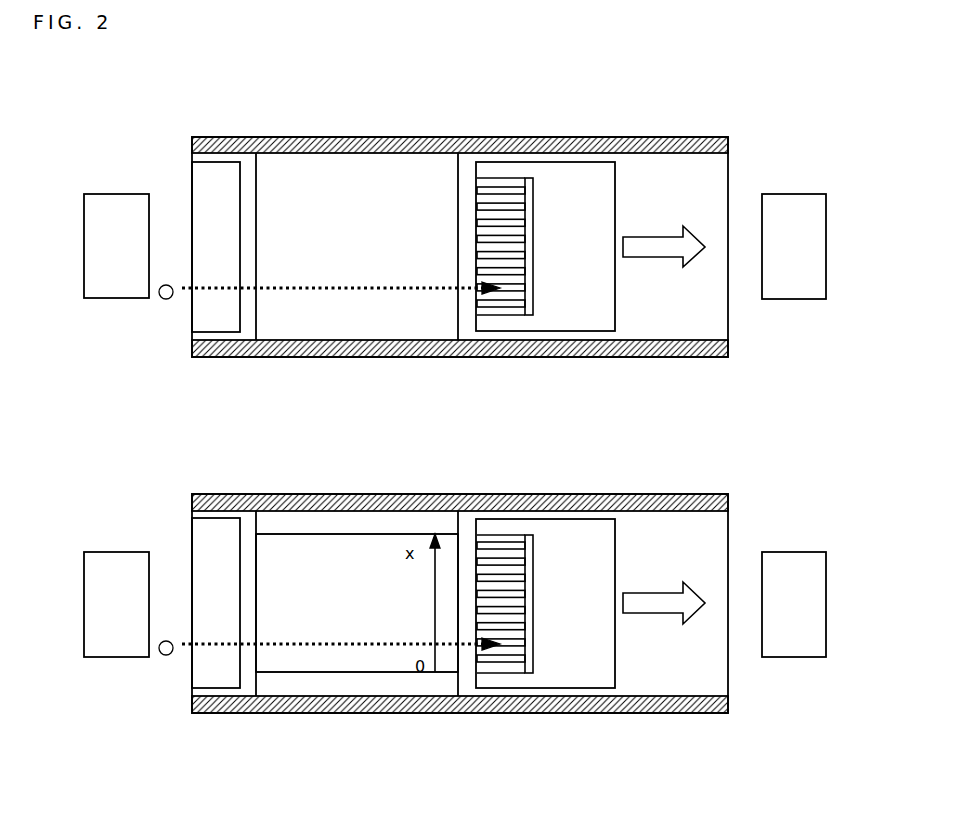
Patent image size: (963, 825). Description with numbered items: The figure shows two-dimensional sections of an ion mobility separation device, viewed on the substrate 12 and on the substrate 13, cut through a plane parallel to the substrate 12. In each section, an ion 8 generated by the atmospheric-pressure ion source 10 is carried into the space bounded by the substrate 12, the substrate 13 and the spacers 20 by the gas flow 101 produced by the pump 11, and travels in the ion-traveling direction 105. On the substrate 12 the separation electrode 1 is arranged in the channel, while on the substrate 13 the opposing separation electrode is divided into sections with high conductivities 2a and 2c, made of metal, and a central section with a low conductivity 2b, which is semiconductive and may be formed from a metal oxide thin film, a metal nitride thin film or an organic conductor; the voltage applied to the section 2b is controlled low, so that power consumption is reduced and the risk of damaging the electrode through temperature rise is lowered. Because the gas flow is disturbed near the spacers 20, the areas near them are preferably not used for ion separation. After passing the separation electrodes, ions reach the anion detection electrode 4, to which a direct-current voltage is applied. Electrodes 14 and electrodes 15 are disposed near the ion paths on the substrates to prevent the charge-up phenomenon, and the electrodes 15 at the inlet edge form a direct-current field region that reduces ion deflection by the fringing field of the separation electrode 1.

The separation electrode 1 is at (288, 170).
The section with high conductivity 2a is at (393, 681).
The section with low conductivity 2b is at (353, 558).
The section with high conductivity 2c is at (288, 527).
The anion detection electrode 4 is at (470, 248).
The ion 8 is at (163, 300).
The atmospheric-pressure ion source 10 is at (116, 425).
The pump 11 is at (794, 425).
The substrate 12 is at (651, 171).
The substrate 13 is at (680, 525).
The electrodes 14 is at (577, 540).
The electrodes 15 is at (197, 545).
The spacers 20 is at (240, 500).
The gas flow 101 is at (653, 236).
The ion-traveling direction 105 is at (337, 284).